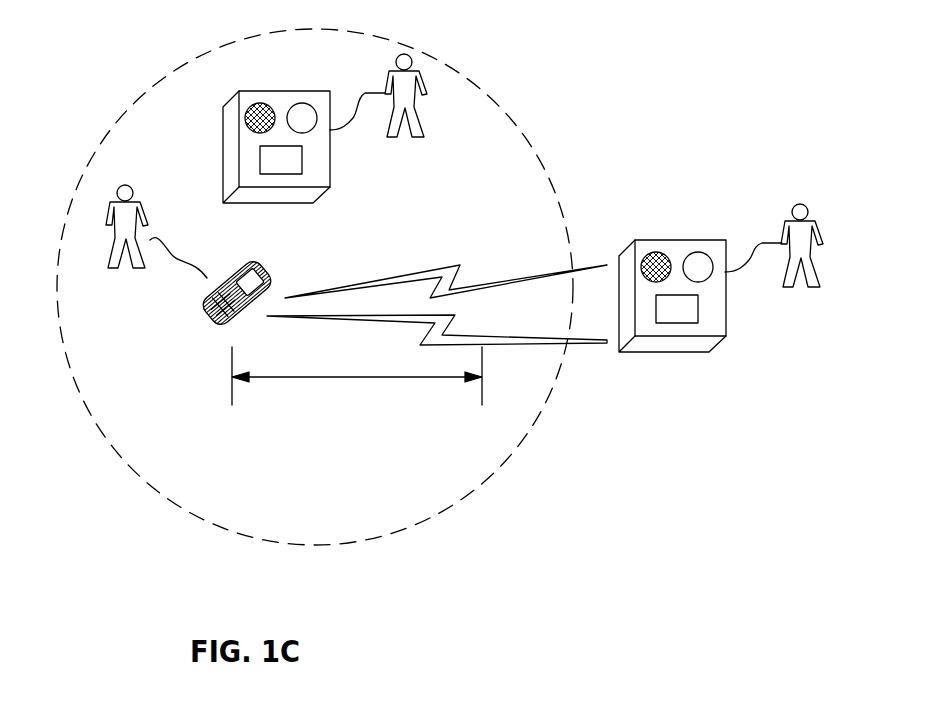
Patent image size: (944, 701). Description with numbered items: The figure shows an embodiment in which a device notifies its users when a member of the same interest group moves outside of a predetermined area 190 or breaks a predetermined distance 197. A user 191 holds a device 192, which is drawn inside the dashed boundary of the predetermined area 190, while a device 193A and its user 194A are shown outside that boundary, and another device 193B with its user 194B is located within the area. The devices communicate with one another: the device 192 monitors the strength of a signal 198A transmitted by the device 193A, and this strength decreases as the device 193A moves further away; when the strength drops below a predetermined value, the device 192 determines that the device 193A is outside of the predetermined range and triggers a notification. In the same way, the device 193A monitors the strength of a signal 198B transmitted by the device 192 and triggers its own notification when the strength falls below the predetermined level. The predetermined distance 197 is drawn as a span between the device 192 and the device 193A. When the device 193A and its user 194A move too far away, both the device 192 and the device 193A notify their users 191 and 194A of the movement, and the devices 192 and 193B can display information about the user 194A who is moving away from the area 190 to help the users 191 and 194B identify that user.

The predetermined area 190 is at (508, 110).
The user 191 is at (112, 203).
The device 192 is at (262, 265).
The device 193A is at (660, 240).
The device 193B is at (265, 91).
The user 194A is at (803, 202).
The user 194B is at (405, 53).
The predetermined distance 197 is at (330, 377).
The signal 198A is at (428, 268).
The signal 198B is at (308, 318).